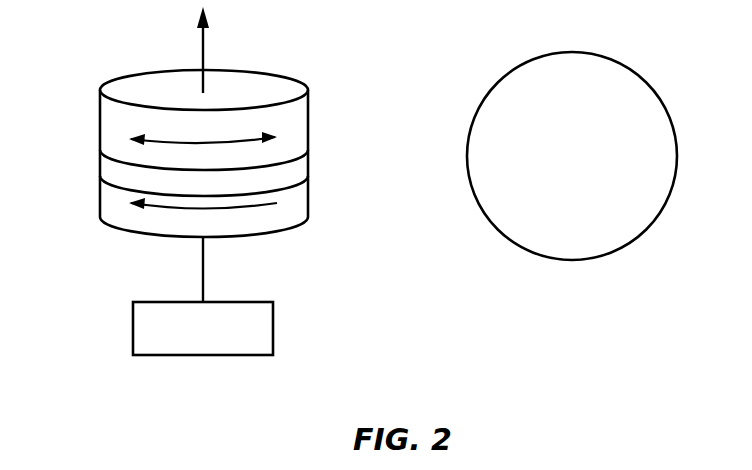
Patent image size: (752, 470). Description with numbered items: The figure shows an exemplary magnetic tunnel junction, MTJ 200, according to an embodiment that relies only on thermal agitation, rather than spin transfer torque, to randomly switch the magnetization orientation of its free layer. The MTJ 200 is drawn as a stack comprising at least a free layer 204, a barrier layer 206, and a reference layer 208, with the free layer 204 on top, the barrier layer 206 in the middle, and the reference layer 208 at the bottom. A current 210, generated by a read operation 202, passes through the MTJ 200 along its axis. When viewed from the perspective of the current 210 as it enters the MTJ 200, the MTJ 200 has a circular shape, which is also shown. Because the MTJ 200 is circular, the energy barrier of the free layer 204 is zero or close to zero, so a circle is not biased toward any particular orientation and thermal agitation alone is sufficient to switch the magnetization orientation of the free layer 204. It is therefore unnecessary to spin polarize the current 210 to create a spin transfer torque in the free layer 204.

The magnetic tunnel junction 200 is at (119, 59).
The read operation 202 is at (237, 302).
The free layer 204 is at (308, 128).
The barrier layer 206 is at (308, 160).
The reference layer 208 is at (308, 197).
The current 210 is at (203, 42).